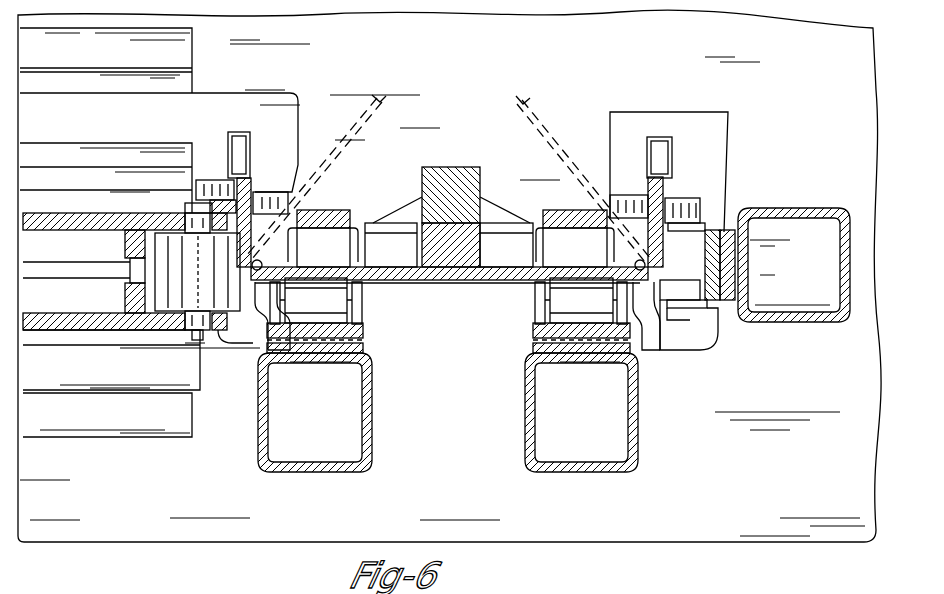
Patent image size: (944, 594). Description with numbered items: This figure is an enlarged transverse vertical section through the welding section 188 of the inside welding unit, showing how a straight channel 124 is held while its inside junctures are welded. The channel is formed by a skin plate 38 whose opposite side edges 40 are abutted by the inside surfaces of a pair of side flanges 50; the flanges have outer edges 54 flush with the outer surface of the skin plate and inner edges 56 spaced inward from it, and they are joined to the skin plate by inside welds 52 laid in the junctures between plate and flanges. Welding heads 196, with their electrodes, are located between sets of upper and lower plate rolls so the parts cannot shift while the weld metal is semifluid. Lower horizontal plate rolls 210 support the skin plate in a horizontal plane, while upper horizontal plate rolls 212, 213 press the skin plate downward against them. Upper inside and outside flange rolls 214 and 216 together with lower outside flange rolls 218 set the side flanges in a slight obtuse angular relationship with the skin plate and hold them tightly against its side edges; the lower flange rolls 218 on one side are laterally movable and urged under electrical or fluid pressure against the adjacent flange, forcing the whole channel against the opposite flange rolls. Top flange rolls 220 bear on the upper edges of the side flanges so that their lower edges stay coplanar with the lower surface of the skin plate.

The skin plate 38 is at (420, 283).
The side edges 40 is at (658, 272).
The side flanges 50 is at (257, 190).
The inside welds 52 is at (262, 283).
The outer edges 54 is at (662, 323).
The inner edges 56 is at (658, 182).
The straight channel 124 is at (487, 282).
The welding section 188 is at (733, 103).
The welding heads 196 is at (522, 117).
The lower horizontal plate rolls 210 is at (332, 299).
The upper horizontal plate rolls 212 is at (392, 243).
The upper horizontal plate rolls 213 is at (322, 244).
The upper inside flange rolls 214 is at (271, 191).
The upper outside flange rolls 216 is at (220, 197).
The lower outside flange rolls 218 is at (173, 303).
The top flange rolls 220 is at (238, 143).